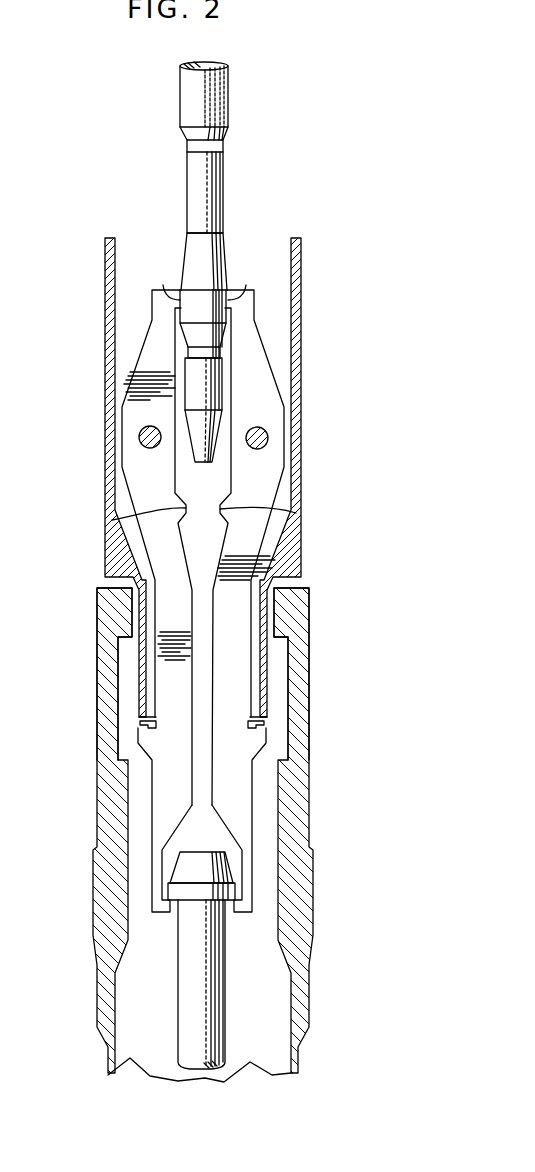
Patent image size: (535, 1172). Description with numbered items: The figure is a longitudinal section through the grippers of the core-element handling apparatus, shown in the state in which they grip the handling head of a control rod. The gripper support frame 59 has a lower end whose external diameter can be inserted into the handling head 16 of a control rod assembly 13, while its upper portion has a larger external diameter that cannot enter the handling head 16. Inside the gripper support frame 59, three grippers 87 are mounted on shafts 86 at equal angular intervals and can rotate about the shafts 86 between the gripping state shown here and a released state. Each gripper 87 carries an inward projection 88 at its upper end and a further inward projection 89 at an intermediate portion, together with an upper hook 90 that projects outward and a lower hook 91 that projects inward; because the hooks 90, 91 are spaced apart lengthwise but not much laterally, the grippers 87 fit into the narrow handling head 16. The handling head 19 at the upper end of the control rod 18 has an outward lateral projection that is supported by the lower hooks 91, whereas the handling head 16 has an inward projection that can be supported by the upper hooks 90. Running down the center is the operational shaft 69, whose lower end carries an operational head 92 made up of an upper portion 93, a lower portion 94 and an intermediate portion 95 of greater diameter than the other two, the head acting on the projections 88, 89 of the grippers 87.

The control rod assembly 13 is at (310, 778).
The handling head 16 is at (298, 620).
The control rod 18 is at (218, 1010).
The handling head 19 is at (207, 870).
The gripper support frame 59 is at (300, 283).
The operational shaft 69 is at (228, 88).
The shafts 86 is at (139, 440).
The grippers 87 is at (135, 478).
The projection 88 is at (163, 285).
The projection 89 is at (112, 520).
The upper hook 90 is at (140, 728).
The lower hook 91 is at (168, 917).
The operational head 92 is at (225, 239).
The upper portion 93 is at (192, 173).
The lower portion 94 is at (222, 385).
The intermediate portion 95 is at (227, 322).